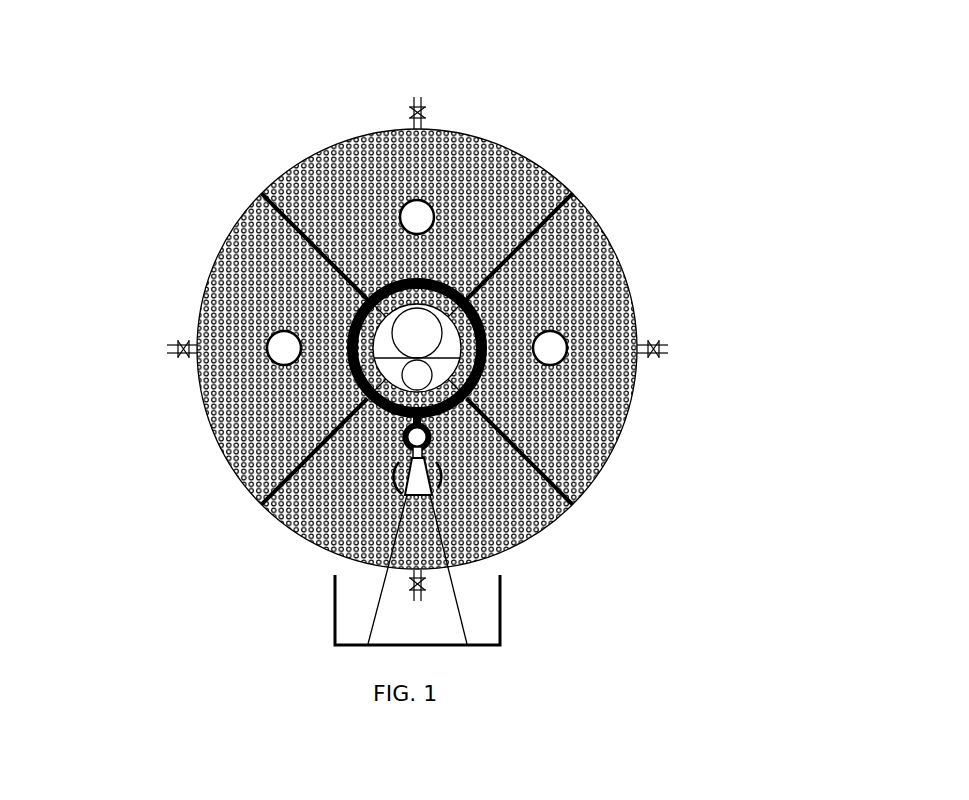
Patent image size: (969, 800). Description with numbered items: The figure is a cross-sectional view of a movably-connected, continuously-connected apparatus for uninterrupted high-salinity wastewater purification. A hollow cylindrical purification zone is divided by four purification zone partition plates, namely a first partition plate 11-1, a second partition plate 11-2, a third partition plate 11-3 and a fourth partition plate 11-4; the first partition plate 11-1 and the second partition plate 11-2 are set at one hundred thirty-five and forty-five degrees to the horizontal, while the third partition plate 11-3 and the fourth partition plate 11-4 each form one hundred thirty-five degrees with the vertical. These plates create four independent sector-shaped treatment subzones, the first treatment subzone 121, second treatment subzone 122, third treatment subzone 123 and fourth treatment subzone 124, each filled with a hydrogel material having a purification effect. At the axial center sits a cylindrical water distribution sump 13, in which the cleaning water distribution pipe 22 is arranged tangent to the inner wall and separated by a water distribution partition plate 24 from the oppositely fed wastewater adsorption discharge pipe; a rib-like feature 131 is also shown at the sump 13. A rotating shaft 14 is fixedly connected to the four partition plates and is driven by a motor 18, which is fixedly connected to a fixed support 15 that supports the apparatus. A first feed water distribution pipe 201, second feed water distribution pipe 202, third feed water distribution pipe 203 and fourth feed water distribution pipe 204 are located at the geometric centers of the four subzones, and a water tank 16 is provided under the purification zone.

The first partition plate 11-1 is at (290, 213).
The second partition plate 11-2 is at (548, 219).
The third partition plate 11-3 is at (261, 506).
The fourth partition plate 11-4 is at (573, 505).
The water distribution sump 13 is at (417, 333).
The support rib 131 is at (722, 165).
The rotating shaft 14 is at (467, 383).
The fixed support 15 is at (452, 587).
The water tank 16 is at (335, 577).
The motor 18 is at (437, 443).
The cleaning water distribution pipe 22 is at (155, 536).
The water distribution partition plate 24 is at (155, 433).
The first treatment subzone 121 is at (417, 238).
The second treatment subzone 122 is at (527, 349).
The third treatment subzone 123 is at (417, 459).
The fourth treatment subzone 124 is at (306, 349).
The first feed water distribution pipe 201 is at (443, 207).
The second feed water distribution pipe 202 is at (757, 375).
The third feed water distribution pipe 203 is at (400, 479).
The fourth feed water distribution pipe 204 is at (277, 318).